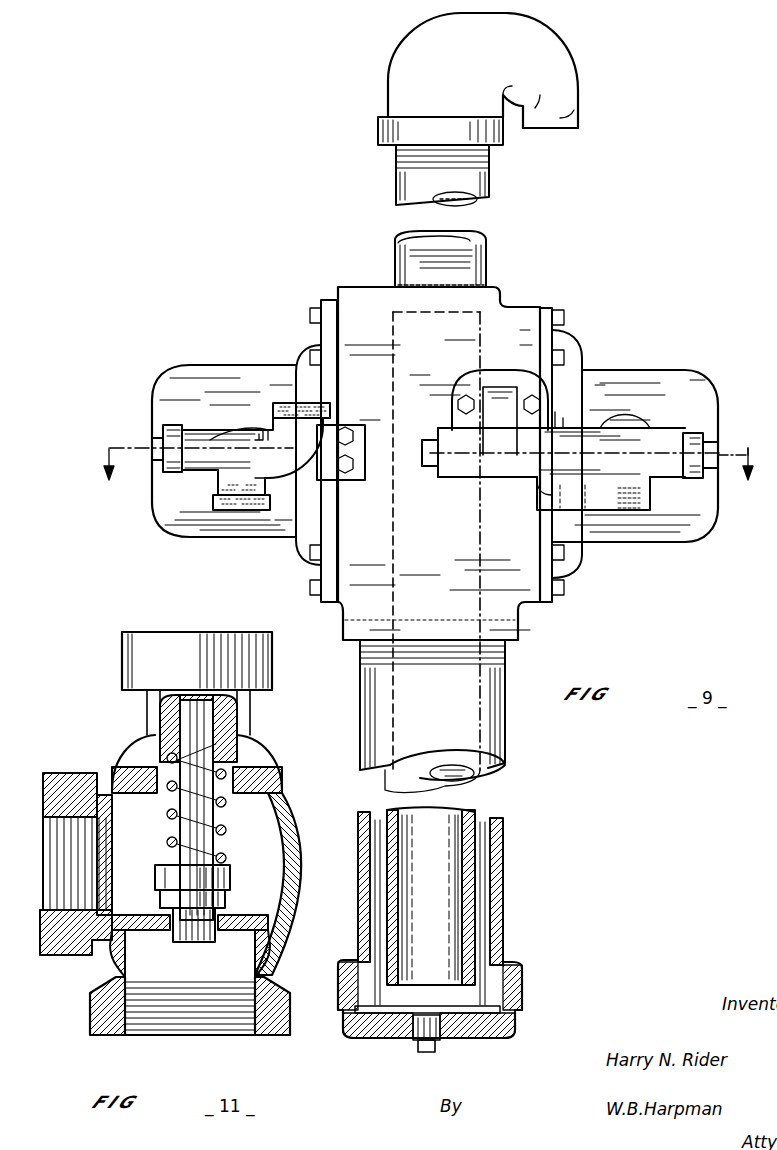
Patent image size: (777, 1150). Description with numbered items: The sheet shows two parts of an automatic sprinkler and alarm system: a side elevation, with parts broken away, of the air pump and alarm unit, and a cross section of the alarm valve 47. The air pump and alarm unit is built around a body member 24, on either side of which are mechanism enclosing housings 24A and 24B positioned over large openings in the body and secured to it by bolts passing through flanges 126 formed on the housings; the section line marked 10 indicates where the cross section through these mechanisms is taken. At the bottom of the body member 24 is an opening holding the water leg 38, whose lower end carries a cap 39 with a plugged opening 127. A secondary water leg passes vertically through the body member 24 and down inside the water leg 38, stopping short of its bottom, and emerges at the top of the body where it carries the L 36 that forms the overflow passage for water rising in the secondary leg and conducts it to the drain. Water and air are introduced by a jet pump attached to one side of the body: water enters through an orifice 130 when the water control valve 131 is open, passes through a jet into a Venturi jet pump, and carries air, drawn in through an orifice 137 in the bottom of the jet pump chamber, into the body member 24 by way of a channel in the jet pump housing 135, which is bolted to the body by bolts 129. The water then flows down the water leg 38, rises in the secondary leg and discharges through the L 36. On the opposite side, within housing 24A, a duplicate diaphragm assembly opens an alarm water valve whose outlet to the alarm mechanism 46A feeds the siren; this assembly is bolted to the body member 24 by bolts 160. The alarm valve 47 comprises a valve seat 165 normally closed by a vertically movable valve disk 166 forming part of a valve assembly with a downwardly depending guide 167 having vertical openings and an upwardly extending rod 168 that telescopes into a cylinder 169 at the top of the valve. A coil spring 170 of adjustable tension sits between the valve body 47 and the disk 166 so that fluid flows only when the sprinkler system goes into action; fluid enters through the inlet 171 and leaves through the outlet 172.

In FIG. 9, the section line 10 is at (436, 481).
In FIG. 9, the body member 24 is at (352, 327).
In FIG. 9, the mechanism enclosing housing 24A is at (206, 364).
In FIG. 9, the mechanism enclosing housing 24B is at (618, 384).
In FIG. 9, the L 36 is at (578, 116).
In FIG. 9, the water leg 38 is at (506, 722).
In FIG. 9, the cap 39 is at (510, 968).
In FIG. 9, the outlet to the alarm mechanism 46A is at (300, 405).
In FIG. 9, the flanges 126 is at (330, 300).
In FIG. 9, the plugged opening 127 is at (400, 1040).
In FIG. 9, the bolts 129 is at (500, 405).
In FIG. 9, the orifice 130 is at (628, 508).
In FIG. 9, the water control valve 131 is at (478, 433).
In FIG. 9, the jet pump housing 135 is at (578, 472).
In FIG. 9, the orifice 137 is at (575, 500).
In FIG. 9, the bolts 160 is at (352, 450).
In FIG. 11, the alarm valve 47 is at (292, 806).
In FIG. 11, the valve seat 165 is at (226, 905).
In FIG. 11, the valve disk 166 is at (232, 890).
In FIG. 11, the guide 167 is at (208, 942).
In FIG. 11, the rod 168 is at (214, 848).
In FIG. 11, the cylinder 169 is at (206, 712).
In FIG. 11, the coil spring 170 is at (172, 824).
In FIG. 11, the inlet 171 is at (230, 1036).
In FIG. 11, the outlet 172 is at (56, 955).